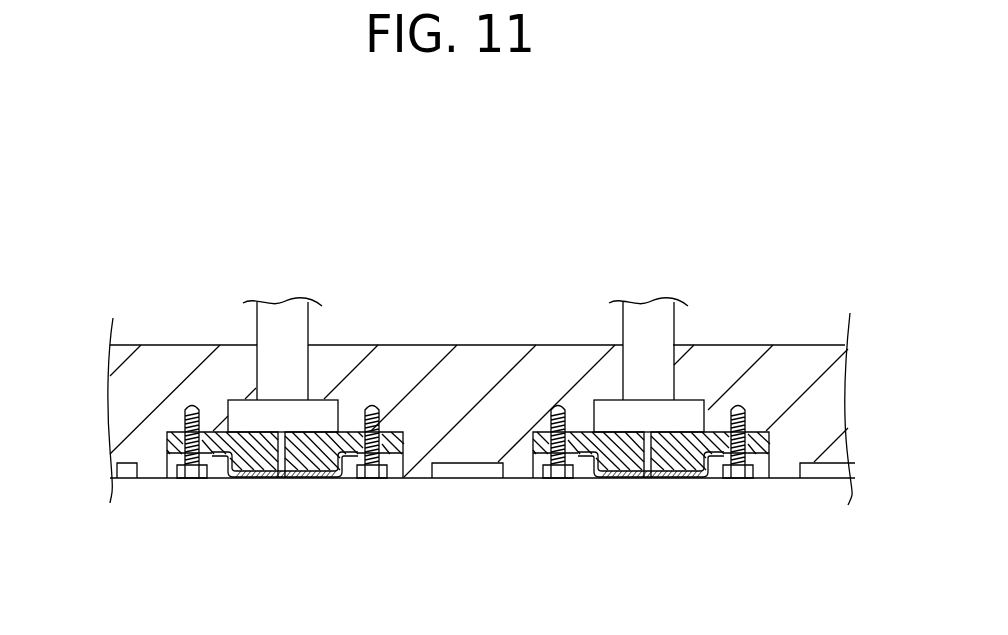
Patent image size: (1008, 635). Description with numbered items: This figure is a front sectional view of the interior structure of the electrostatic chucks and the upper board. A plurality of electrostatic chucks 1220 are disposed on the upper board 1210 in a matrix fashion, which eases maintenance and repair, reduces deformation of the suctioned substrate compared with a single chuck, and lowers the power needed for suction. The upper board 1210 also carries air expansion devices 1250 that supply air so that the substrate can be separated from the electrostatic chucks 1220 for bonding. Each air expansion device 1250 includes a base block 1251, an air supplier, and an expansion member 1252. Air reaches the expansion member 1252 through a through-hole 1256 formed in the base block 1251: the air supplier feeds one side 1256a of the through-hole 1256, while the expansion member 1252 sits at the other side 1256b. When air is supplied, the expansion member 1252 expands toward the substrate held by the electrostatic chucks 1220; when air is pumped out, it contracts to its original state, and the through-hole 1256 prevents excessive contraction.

The upper board 1210 is at (453, 368).
The electrostatic chuck 1220 is at (460, 468).
The air expansion device 1250 is at (650, 423).
The base block 1251 is at (540, 480).
The expansion member 1252 is at (587, 480).
The through-hole 1256 is at (618, 438).
The one side of the through-hole 1256a is at (652, 425).
The other side of the through-hole 1256b is at (655, 480).